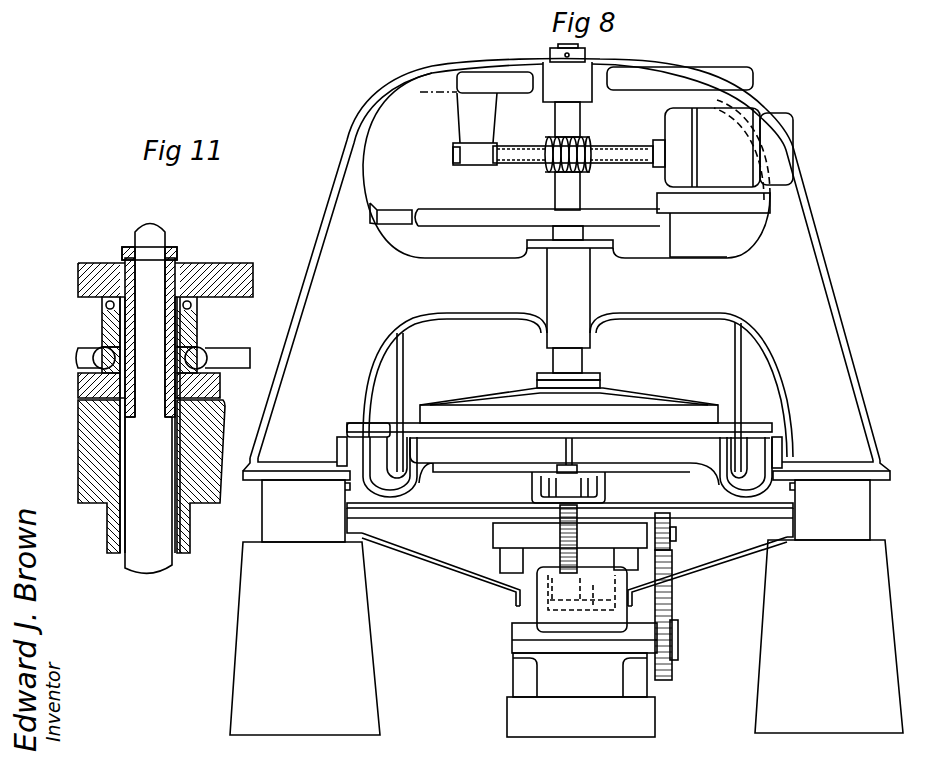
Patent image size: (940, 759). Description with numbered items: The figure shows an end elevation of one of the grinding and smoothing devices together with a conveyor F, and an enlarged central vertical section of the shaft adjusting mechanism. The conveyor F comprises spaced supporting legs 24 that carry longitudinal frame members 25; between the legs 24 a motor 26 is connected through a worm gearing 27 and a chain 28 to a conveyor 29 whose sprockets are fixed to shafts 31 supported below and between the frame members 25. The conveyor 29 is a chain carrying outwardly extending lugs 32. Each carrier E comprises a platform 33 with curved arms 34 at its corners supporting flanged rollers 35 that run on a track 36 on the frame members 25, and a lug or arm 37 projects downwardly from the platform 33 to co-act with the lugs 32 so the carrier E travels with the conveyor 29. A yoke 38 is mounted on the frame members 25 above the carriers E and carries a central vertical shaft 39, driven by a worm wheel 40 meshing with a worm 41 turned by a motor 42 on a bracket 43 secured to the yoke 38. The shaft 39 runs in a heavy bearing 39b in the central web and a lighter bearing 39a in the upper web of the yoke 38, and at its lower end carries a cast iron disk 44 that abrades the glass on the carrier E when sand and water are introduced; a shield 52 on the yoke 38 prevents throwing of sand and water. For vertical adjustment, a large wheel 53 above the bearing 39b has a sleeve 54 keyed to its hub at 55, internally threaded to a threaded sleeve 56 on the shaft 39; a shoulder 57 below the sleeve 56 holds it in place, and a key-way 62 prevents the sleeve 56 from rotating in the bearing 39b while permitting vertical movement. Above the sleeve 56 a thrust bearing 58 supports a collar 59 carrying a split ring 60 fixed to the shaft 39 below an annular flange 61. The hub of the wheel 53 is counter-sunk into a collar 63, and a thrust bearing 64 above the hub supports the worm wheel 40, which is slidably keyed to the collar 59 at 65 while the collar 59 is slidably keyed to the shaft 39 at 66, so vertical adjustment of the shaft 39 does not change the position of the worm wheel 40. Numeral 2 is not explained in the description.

In FIG. 8, the machine 2 is at (516, 50).
In FIG. 8, the supporting legs 24 is at (566, 637).
In FIG. 8, the longitudinal frame members 25 is at (345, 501).
In FIG. 8, the motor 26 is at (570, 520).
In FIG. 8, the worm gearing 27 is at (575, 621).
In FIG. 8, the chain 28 is at (670, 592).
In FIG. 8, the conveyor 29 is at (558, 550).
In FIG. 8, the shafts 31 is at (667, 550).
In FIG. 8, the lugs 32 is at (535, 478).
In FIG. 8, the platform 33 is at (477, 432).
In FIG. 8, the curved arms 34 is at (567, 467).
In FIG. 8, the rollers 35 is at (780, 450).
In FIG. 8, the track 36 is at (797, 478).
In FIG. 8, the lug or arm 37 is at (578, 468).
In FIG. 8, the yoke 38 is at (566, 265).
In FIG. 8, the vertical shaft 39 is at (556, 117).
In FIG. 11, the vertical shaft 39 is at (148, 495).
In FIG. 8, the bearing 39a is at (583, 72).
In FIG. 8, the bearing 39b is at (570, 294).
In FIG. 11, the bearing 39b is at (213, 432).
In FIG. 8, the worm wheel 40 is at (521, 164).
In FIG. 11, the worm wheel 40 is at (220, 263).
In FIG. 8, the worm 41 is at (588, 138).
In FIG. 8, the motor 42 is at (723, 147).
In FIG. 8, the bracket 43 is at (722, 208).
In FIG. 8, the cast iron disk 44 is at (433, 417).
In FIG. 8, the shield 52 is at (405, 351).
In FIG. 8, the large wheel 53 is at (507, 217).
In FIG. 11, the large wheel 53 is at (78, 360).
In FIG. 11, the sleeve 54 is at (108, 317).
In FIG. 11, the key 55 is at (102, 333).
In FIG. 11, the threaded sleeve 56 is at (217, 378).
In FIG. 11, the shoulder 57 is at (143, 417).
In FIG. 11, the thrust bearing 58 is at (96, 368).
In FIG. 11, the sleeve or collar 59 is at (122, 263).
In FIG. 11, the split ring 60 is at (130, 247).
In FIG. 11, the annular flange 61 is at (163, 232).
In FIG. 11, the key-way 62 is at (132, 378).
In FIG. 11, the collar 63 is at (165, 400).
In FIG. 11, the thrust bearing 64 is at (192, 305).
In FIG. 11, the key 65 is at (177, 263).
In FIG. 11, the key 66 is at (136, 280).
In FIG. 8, the carriers E is at (564, 461).
In FIG. 8, the conveyors F is at (882, 622).